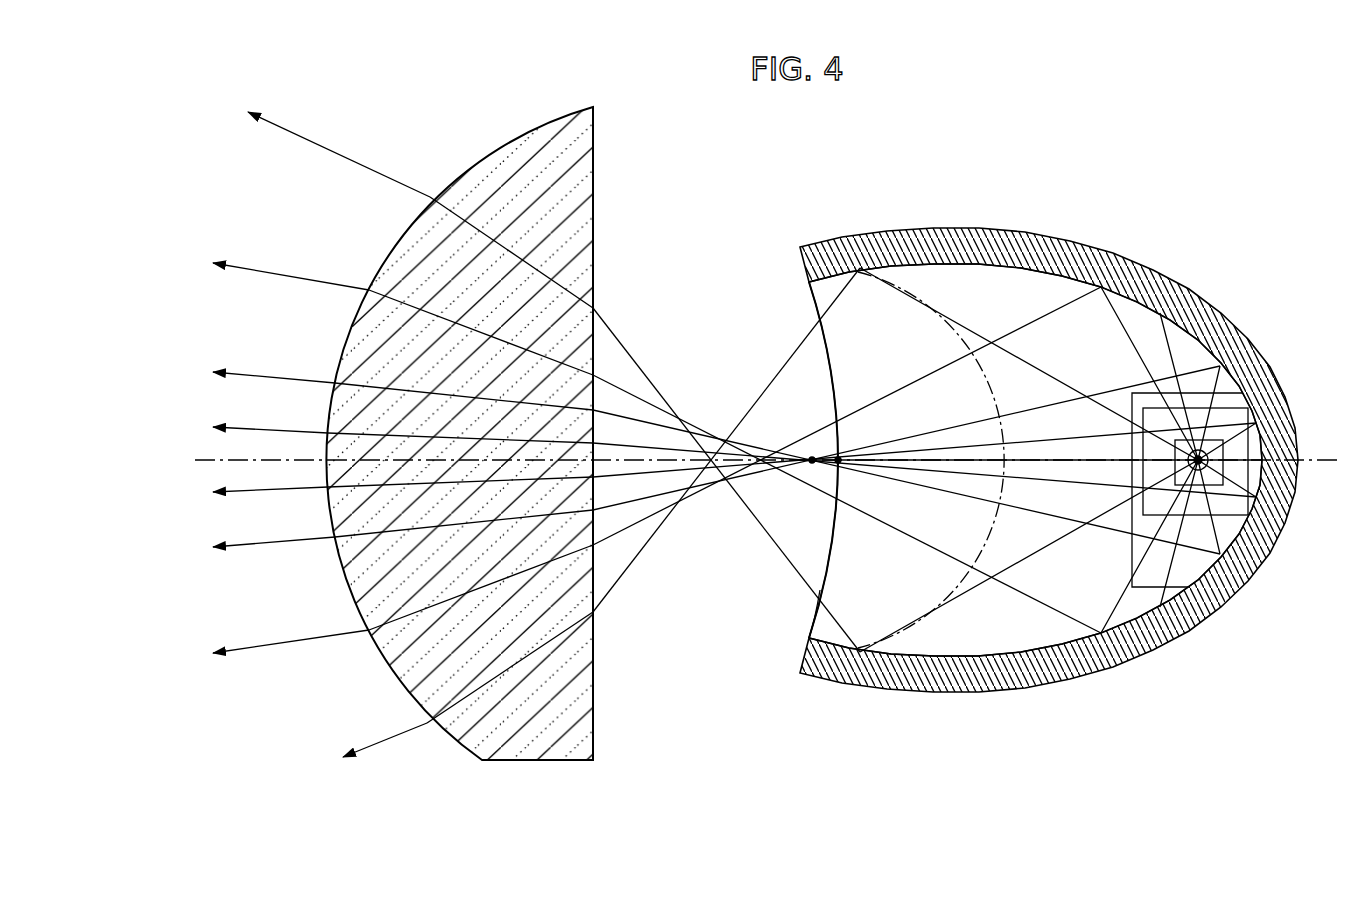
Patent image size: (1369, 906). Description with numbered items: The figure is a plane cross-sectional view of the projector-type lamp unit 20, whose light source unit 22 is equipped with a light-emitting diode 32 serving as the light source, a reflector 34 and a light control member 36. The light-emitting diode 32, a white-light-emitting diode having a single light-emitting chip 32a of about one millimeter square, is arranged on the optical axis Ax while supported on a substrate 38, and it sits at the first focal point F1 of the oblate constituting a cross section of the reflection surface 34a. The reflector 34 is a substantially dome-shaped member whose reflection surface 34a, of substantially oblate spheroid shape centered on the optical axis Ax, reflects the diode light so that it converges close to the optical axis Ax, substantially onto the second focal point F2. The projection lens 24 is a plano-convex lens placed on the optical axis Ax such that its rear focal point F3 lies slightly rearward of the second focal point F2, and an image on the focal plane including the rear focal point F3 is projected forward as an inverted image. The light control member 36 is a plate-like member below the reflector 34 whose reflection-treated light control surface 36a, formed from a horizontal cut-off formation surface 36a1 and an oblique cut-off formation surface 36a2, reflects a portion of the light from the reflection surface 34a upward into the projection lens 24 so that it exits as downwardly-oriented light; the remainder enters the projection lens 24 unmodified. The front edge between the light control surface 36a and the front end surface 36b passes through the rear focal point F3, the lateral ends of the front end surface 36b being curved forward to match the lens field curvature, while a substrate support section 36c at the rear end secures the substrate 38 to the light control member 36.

The lamp unit 20 is at (1104, 152).
The light source unit 22 is at (783, 233).
The projection lens 24 is at (462, 172).
The light-emitting diode 32 is at (1226, 466).
The light-emitting chip 32a is at (1224, 440).
The reflector 34 is at (1150, 263).
The reflection surface 34a is at (1037, 266).
The light control member 36 is at (805, 302).
The light control surface 36a is at (740, 638).
The horizontal cut-off formation surface 36a1 is at (853, 548).
The oblique cut-off formation surface 36a2 is at (863, 373).
The front end surface 36b is at (812, 620).
The substrate support section 36c is at (1160, 568).
The substrate 38 is at (1232, 400).
The optical axis Ax is at (248, 458).
The first focal point F1 is at (1223, 605).
The second focal point F2 is at (818, 457).
The rear focal point F3 is at (840, 468).